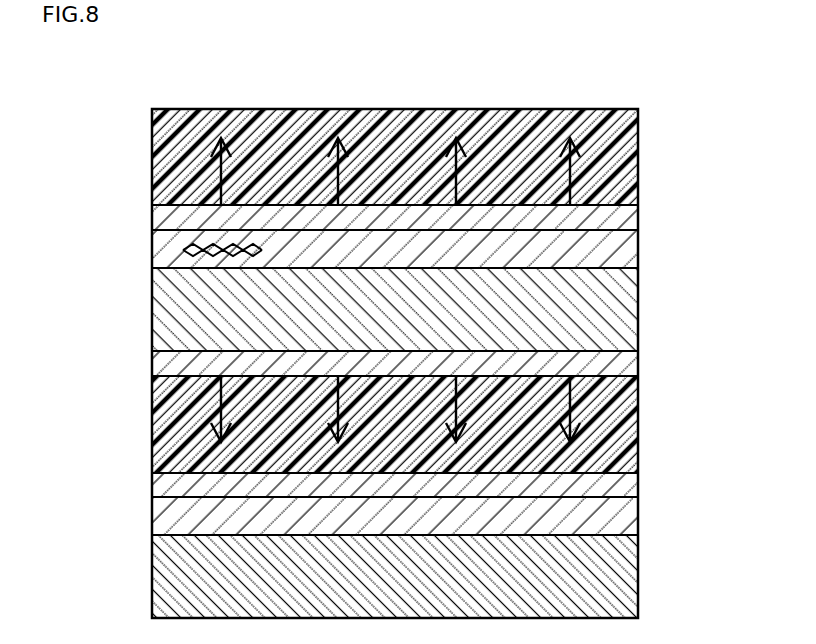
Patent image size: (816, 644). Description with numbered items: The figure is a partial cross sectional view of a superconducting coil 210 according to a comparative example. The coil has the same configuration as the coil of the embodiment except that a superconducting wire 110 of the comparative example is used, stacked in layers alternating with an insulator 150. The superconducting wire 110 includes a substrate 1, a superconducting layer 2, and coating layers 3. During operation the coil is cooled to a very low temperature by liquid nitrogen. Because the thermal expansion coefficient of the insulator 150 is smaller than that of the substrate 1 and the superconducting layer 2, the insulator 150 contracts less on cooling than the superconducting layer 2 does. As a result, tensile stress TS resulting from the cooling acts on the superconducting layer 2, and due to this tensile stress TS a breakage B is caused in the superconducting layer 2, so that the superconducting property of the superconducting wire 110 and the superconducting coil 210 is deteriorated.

The superconducting coil 210 is at (415, 322).
The insulator 150 is at (152, 163).
The superconducting wire 110 is at (700, 210).
The substrate 1 is at (632, 309).
The superconducting layer 2 is at (632, 252).
The coating layers 3 is at (632, 216).
The breakage B is at (183, 250).
The tensile stress TS is at (571, 408).